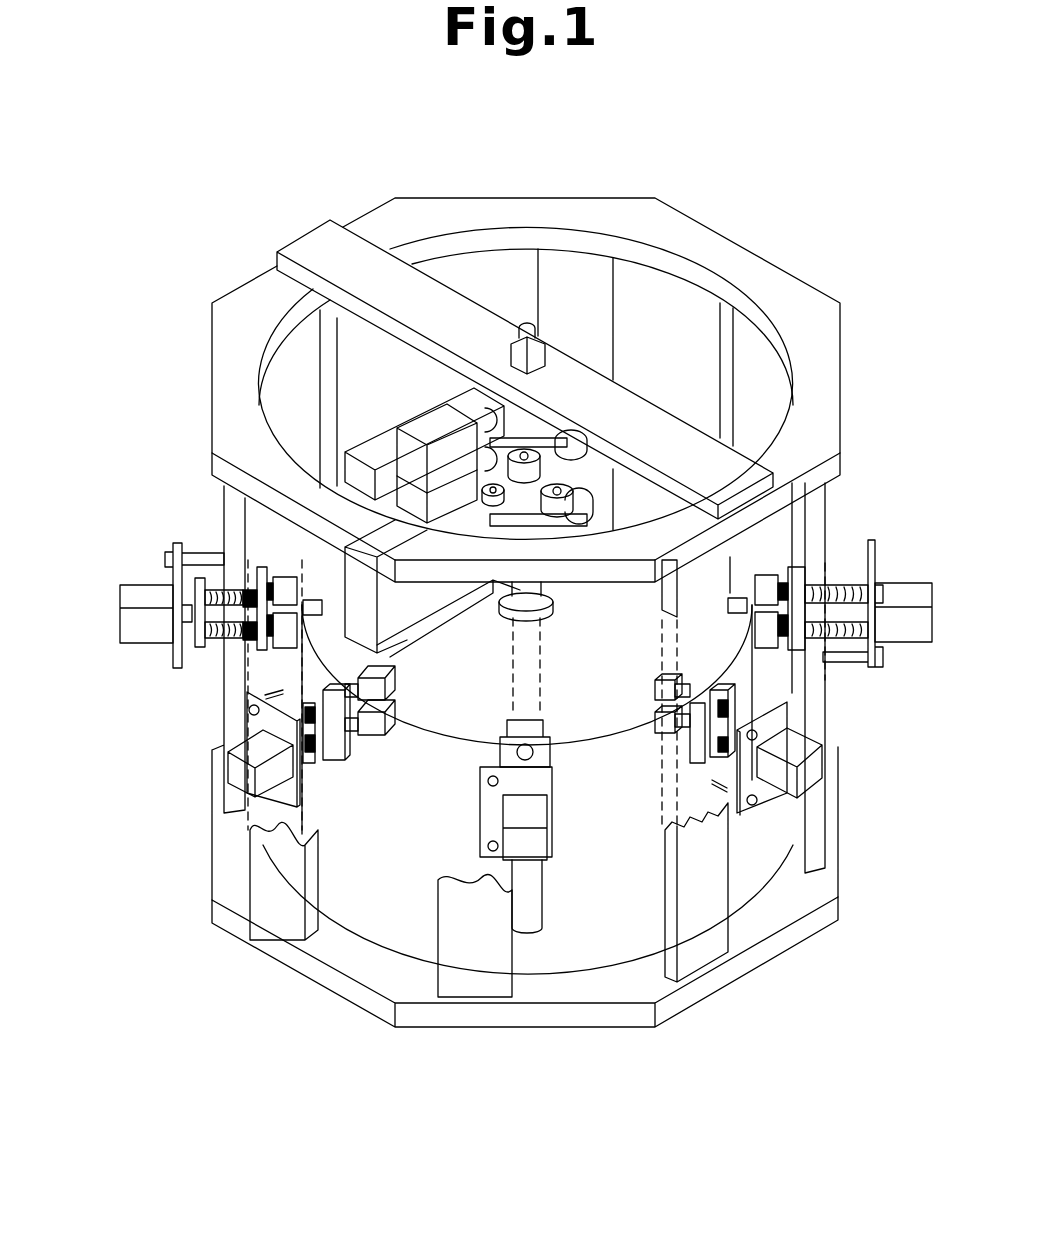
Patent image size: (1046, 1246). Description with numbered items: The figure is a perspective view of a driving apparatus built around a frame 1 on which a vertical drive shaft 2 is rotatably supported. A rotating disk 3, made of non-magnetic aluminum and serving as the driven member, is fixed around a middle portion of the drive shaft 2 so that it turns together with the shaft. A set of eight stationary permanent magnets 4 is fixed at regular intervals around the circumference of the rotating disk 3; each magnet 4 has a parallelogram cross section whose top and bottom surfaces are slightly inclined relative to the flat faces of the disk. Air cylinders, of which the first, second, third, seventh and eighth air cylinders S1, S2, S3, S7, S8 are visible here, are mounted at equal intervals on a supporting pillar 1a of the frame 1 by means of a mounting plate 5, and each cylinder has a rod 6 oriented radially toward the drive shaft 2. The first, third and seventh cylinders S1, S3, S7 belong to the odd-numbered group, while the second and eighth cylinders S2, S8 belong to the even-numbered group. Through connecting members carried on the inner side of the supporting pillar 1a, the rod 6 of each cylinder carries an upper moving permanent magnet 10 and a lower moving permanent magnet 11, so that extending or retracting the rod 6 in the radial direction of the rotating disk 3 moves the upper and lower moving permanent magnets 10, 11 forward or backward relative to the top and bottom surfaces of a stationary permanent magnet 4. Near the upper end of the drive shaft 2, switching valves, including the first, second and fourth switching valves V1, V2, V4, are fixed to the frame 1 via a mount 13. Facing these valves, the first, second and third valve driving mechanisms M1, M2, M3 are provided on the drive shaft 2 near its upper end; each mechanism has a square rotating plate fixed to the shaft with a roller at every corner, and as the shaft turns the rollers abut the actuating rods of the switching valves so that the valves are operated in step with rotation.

The frame 1 is at (842, 375).
The supporting pillar 1a is at (320, 348).
The drive shaft 2 is at (530, 596).
The rotating disk 3 is at (605, 737).
The stationary permanent magnet 4 is at (307, 605).
The mounting plate 5 is at (168, 658).
The rod 6 is at (183, 613).
The upper moving permanent magnet 10 is at (285, 560).
The lower moving permanent magnet 11 is at (286, 637).
The mount 13 is at (375, 443).
The first switching valve V1 is at (447, 457).
The second switching valve V2 is at (445, 507).
The fourth switching valve V4 is at (448, 620).
The first valve driving mechanism M1 is at (535, 423).
The second valve driving mechanism M2 is at (588, 444).
The third valve driving mechanism M3 is at (601, 495).
The first air cylinder S1 is at (540, 847).
The second air cylinder S2 is at (233, 772).
The third air cylinder S3 is at (127, 623).
The seventh air cylinder S7 is at (910, 590).
The eighth air cylinder S8 is at (817, 770).